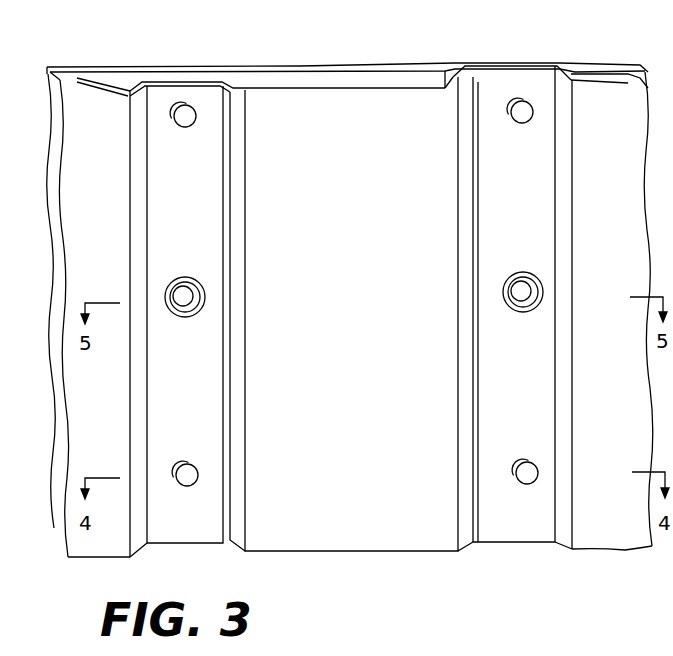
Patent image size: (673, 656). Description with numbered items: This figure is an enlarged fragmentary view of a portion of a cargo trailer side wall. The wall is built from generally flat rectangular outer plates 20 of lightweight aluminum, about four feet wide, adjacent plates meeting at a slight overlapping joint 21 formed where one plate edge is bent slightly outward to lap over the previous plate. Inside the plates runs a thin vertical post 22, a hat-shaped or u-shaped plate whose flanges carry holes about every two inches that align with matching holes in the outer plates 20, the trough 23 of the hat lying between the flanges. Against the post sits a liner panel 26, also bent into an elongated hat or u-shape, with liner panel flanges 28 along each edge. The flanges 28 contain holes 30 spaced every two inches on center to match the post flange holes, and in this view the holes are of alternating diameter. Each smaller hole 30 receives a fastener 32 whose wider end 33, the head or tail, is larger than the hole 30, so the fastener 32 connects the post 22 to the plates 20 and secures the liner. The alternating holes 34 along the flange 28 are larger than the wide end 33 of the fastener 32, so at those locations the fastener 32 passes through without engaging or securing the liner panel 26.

The outer plate 20 is at (318, 67).
The overlapping joint 21 is at (523, 50).
The vertical post 22 is at (351, 314).
The trough 23 is at (611, 654).
The liner panel 26 is at (622, 236).
The liner panel flange 28 is at (200, 523).
The hole 30 is at (513, 124).
The fastener 32 is at (184, 118).
The wide end of the fastener 33 is at (525, 290).
The alternating hole 34 is at (528, 312).